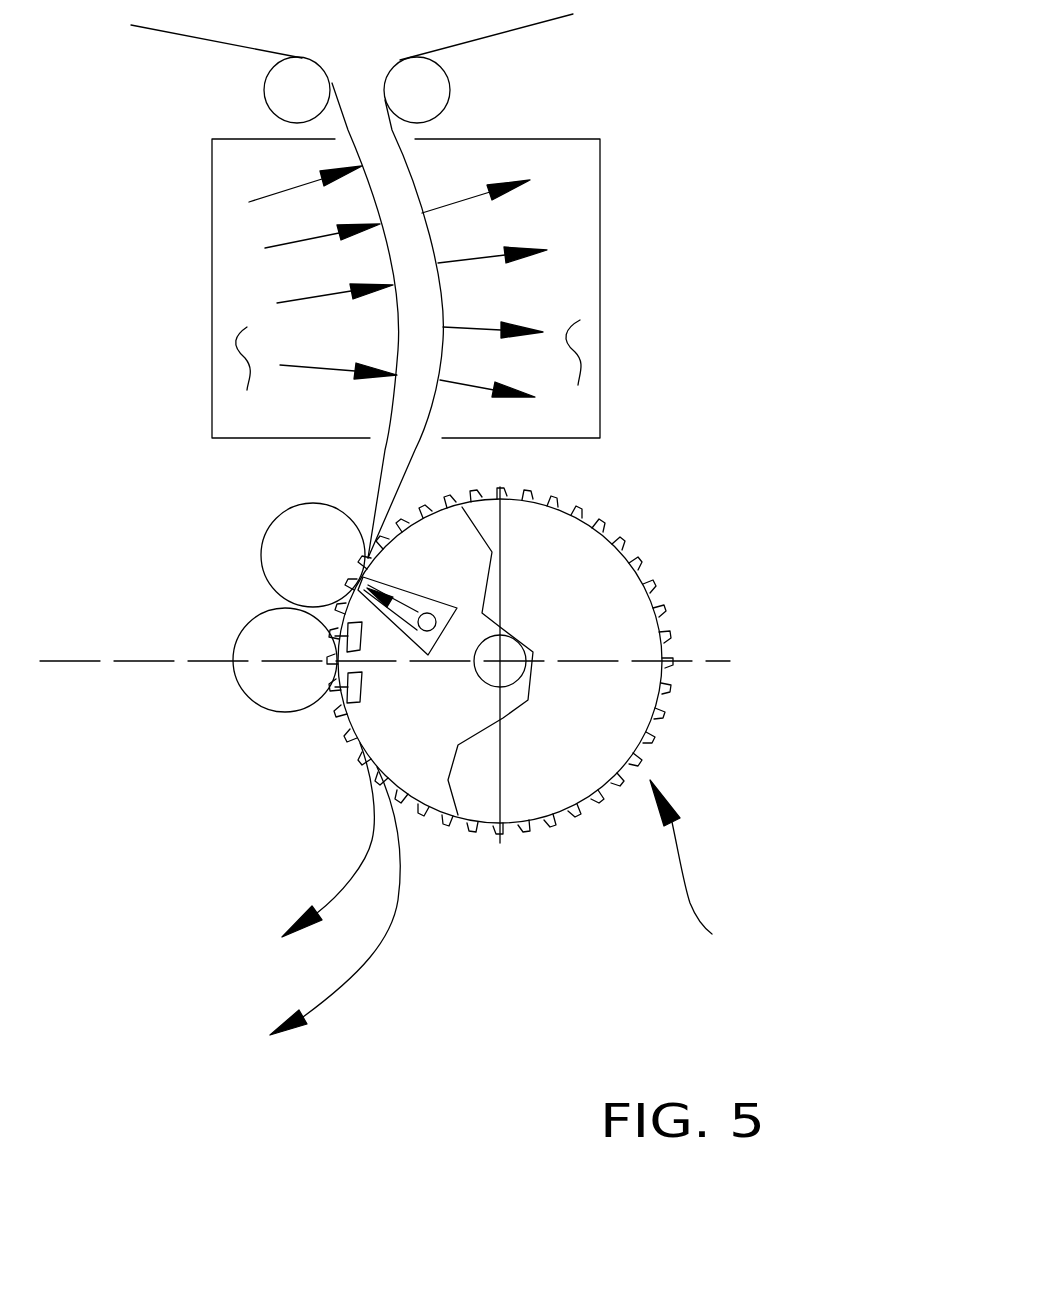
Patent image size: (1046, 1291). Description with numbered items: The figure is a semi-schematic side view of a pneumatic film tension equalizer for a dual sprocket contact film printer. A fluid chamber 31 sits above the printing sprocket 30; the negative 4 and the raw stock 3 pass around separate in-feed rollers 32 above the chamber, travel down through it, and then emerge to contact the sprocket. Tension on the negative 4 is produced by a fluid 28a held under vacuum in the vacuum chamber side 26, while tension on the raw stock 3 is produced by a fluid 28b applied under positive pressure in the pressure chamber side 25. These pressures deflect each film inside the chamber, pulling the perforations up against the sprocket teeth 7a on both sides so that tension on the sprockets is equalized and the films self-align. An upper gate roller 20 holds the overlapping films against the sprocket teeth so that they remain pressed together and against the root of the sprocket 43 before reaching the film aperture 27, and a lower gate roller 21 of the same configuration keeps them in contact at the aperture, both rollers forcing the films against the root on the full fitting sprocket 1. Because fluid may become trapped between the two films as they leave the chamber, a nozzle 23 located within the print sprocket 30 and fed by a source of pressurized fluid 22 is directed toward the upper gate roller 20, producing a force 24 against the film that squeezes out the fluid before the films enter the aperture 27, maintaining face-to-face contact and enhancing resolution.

The full fitting sprocket 1 is at (433, 817).
The raw stock film 3 is at (347, 893).
The negative 4 is at (356, 978).
The sprocket teeth 7a is at (655, 713).
The upper gate roller 20 is at (270, 528).
The lower gate roller 21 is at (253, 711).
The source of pressurized fluid 22 is at (437, 622).
The nozzle 23 is at (440, 600).
The force 24 is at (357, 584).
The pressure chamber side 25 is at (212, 290).
The vacuum chamber side 26 is at (600, 278).
The film aperture 27 is at (348, 636).
The fluid under vacuum 28a is at (580, 358).
The fluid under positive pressure 28b is at (245, 368).
The printing sprocket 30 is at (718, 873).
The fluid chamber 31 is at (638, 153).
The in-feed rollers 32 is at (264, 98).
The root of the sprocket 43 is at (662, 623).